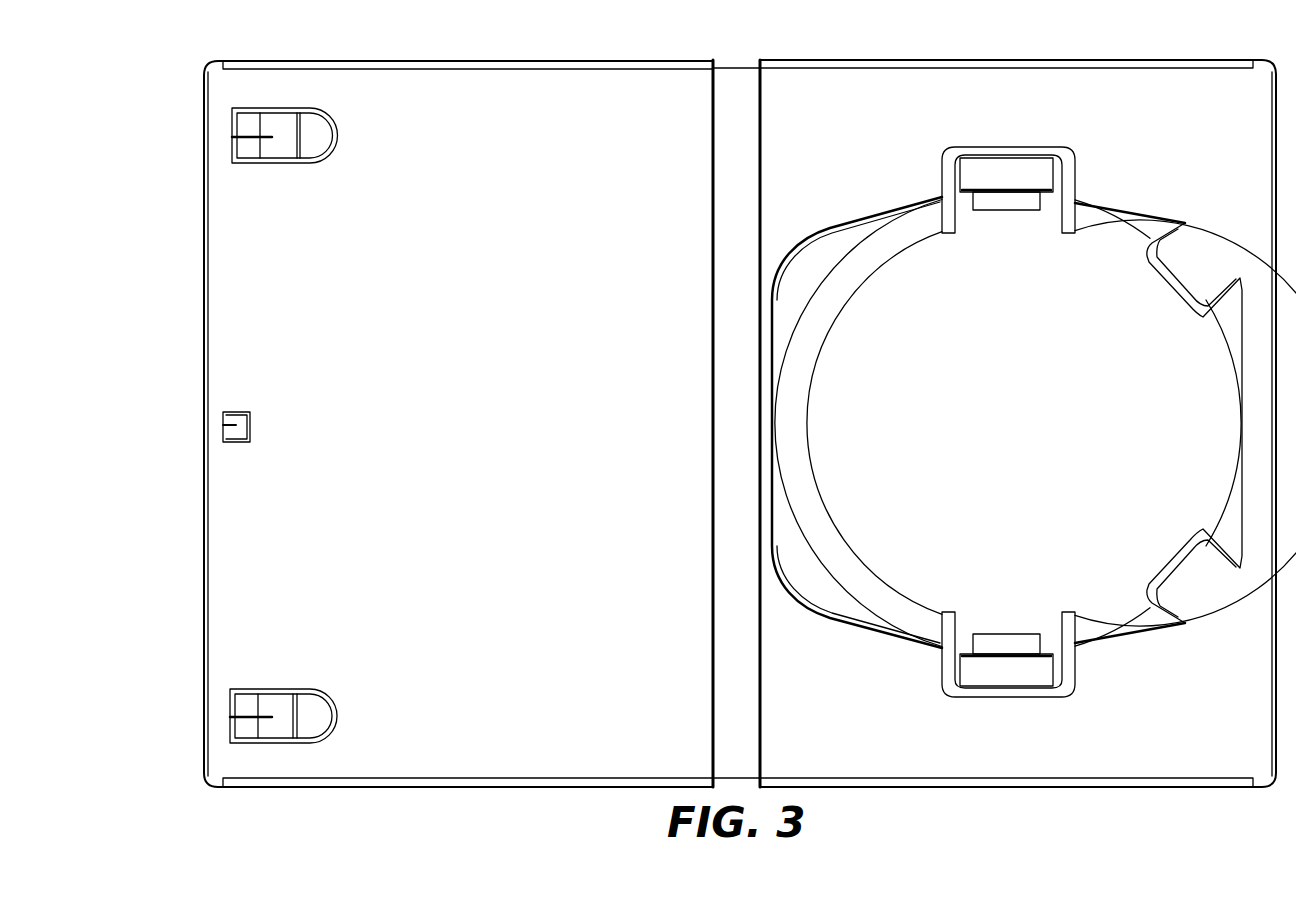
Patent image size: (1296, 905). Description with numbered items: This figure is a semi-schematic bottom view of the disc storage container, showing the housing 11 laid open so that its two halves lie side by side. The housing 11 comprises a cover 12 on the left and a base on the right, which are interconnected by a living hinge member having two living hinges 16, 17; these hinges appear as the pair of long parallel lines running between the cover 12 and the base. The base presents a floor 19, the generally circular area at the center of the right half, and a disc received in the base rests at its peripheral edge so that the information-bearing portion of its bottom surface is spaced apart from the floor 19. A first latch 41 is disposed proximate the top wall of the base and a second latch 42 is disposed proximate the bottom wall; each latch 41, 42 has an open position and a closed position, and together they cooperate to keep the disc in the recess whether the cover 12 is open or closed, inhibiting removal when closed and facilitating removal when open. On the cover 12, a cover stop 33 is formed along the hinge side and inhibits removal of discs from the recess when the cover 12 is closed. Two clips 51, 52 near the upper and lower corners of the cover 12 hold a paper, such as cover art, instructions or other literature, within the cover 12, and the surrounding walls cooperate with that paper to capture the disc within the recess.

The housing 11 is at (1086, 57).
The cover 12 is at (204, 295).
The living hinge 16 is at (762, 706).
The living hinge 17 is at (712, 683).
The floor 19 is at (1050, 453).
The cover stop 33 is at (248, 428).
The first latch 41 is at (1013, 150).
The second latch 42 is at (1002, 698).
The clip 51 is at (316, 712).
The clip 52 is at (322, 131).